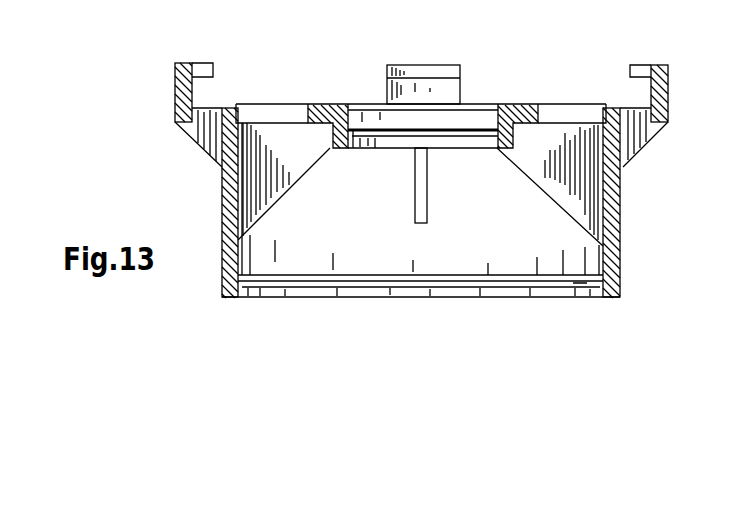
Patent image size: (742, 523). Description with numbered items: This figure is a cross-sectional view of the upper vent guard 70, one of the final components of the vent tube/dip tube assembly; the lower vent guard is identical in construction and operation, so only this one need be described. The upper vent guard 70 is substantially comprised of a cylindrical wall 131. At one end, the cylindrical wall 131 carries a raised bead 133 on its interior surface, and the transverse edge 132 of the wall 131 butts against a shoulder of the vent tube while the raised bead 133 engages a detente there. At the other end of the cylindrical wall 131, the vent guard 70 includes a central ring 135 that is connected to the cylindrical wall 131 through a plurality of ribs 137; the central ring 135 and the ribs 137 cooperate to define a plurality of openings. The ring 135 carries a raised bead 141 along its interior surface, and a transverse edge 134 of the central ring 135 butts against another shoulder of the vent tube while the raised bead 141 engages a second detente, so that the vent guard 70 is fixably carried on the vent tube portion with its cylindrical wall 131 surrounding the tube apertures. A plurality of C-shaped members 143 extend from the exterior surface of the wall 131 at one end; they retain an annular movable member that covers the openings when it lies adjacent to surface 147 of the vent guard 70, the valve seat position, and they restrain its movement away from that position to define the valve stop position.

The upper vent guard 70 is at (367, 34).
The cylindrical wall 131 is at (222, 193).
The transverse edge 132 is at (228, 297).
The raised bead 133 is at (597, 288).
The transverse edge 134 is at (498, 150).
The central ring 135 is at (522, 105).
The ribs 137 is at (284, 173).
The raised bead 141 is at (378, 151).
The C-shaped members 143 is at (206, 63).
The surface 147 is at (275, 103).